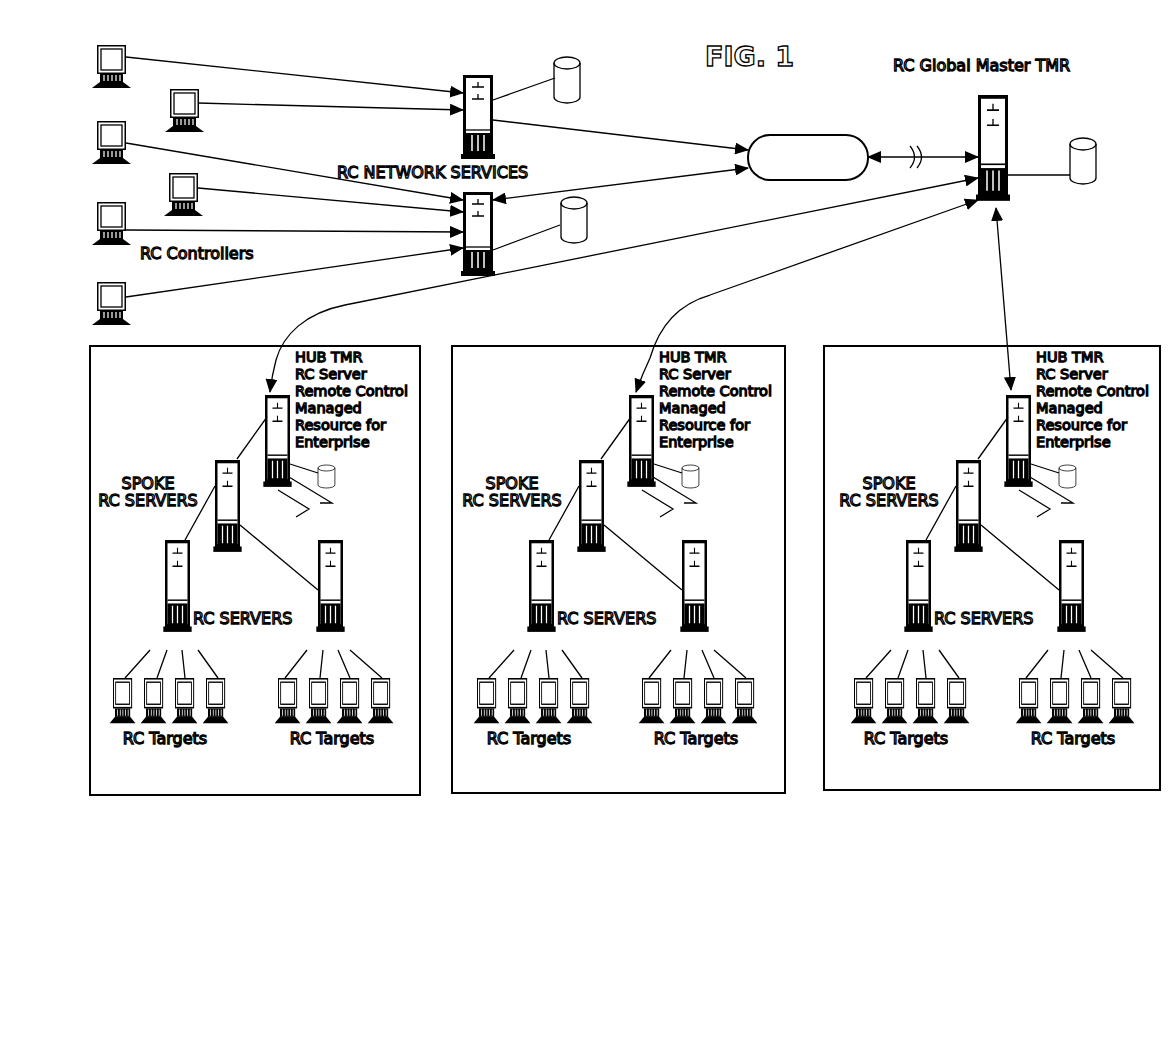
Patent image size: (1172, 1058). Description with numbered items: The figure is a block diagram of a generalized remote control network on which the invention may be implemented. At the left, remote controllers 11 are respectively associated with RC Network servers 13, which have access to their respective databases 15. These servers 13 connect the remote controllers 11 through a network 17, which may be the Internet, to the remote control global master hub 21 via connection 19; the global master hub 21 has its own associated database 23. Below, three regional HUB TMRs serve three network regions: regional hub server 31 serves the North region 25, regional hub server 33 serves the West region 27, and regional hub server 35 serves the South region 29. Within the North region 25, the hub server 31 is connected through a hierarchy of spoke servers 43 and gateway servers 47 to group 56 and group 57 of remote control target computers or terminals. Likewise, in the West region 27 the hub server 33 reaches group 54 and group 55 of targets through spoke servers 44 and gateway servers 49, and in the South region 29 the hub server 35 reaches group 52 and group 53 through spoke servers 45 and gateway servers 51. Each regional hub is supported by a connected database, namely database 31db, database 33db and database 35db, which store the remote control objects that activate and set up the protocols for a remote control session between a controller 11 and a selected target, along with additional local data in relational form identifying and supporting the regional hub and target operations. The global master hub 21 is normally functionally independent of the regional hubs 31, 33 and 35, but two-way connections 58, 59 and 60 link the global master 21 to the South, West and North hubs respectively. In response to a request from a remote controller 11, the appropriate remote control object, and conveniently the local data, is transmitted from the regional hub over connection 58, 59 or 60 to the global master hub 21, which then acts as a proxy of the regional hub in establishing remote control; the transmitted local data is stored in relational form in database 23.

The remote controllers 11 is at (105, 44).
The RC Network servers 13 is at (461, 137).
The databases 15 is at (580, 84).
The network 17 is at (793, 135).
The connection 19 is at (890, 156).
The remote control global master hub 21 is at (1008, 106).
The database 23 is at (1097, 160).
The North network region 25 is at (992, 568).
The West network region 27 is at (618, 569).
The South network region 29 is at (402, 469).
The regional hub server 31 is at (993, 438).
The regional database 31db is at (1098, 481).
The regional hub server 33 is at (616, 438).
The regional database 33db is at (721, 481).
The regional hub server 35 is at (265, 412).
The regional database 35db is at (335, 480).
The spoke servers 43 is at (989, 507).
The spoke servers 44 is at (612, 507).
The spoke servers 45 is at (240, 515).
The gateway servers 47 is at (1015, 572).
The gateway servers 49 is at (638, 572).
The gateway servers 51 is at (342, 547).
The group of remote control target computers 52 is at (200, 668).
The group of remote control target computers 53 is at (348, 662).
The group of remote control target computers 54 is at (557, 655).
The group of remote control target computers 55 is at (712, 655).
The group of remote control target computers 56 is at (934, 655).
The group of remote control target computers 57 is at (1089, 655).
The two-way connection 58 is at (703, 243).
The two-way connection 59 is at (822, 250).
The two-way connection 60 is at (1003, 270).